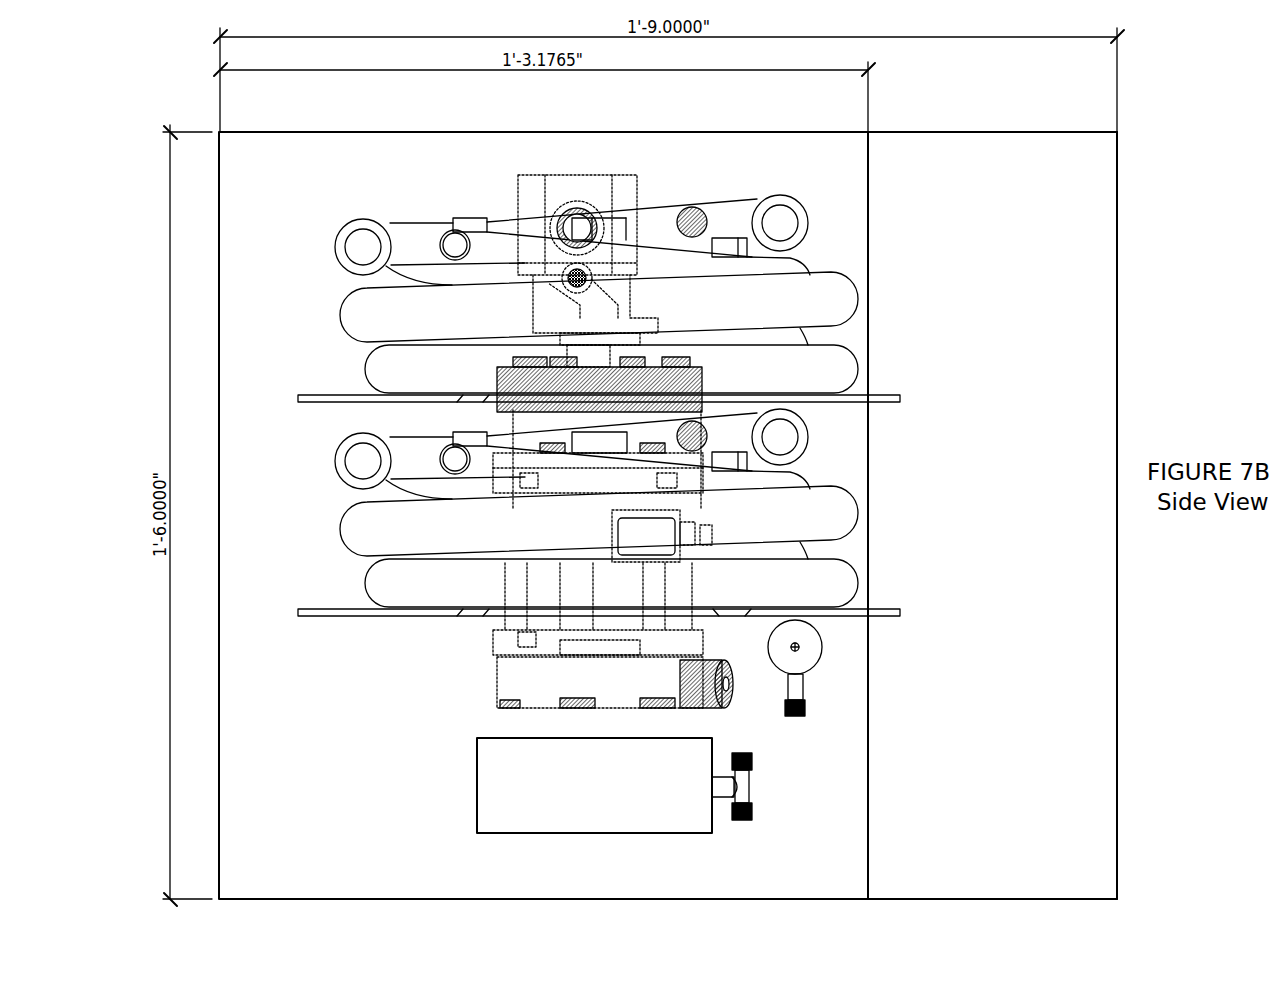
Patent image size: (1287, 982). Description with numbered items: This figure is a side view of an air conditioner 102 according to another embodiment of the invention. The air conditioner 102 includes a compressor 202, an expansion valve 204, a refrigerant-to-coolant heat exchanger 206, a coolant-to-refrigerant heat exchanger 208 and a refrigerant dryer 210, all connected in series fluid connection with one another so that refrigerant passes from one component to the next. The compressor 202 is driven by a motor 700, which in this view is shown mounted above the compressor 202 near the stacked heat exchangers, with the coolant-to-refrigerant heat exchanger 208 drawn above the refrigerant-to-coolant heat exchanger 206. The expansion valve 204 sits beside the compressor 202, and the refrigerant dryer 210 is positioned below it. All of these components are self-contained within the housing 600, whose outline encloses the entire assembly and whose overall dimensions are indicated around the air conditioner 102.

The air conditioner 102 is at (1162, 158).
The housing 600 is at (1117, 262).
The motor 700 is at (531, 193).
The compressor 202 is at (613, 635).
The expansion valve 204 is at (793, 657).
The refrigerant-to-coolant heat exchanger 206 is at (596, 508).
The coolant-to-refrigerant heat exchanger 208 is at (596, 294).
The refrigerant dryer 210 is at (614, 785).